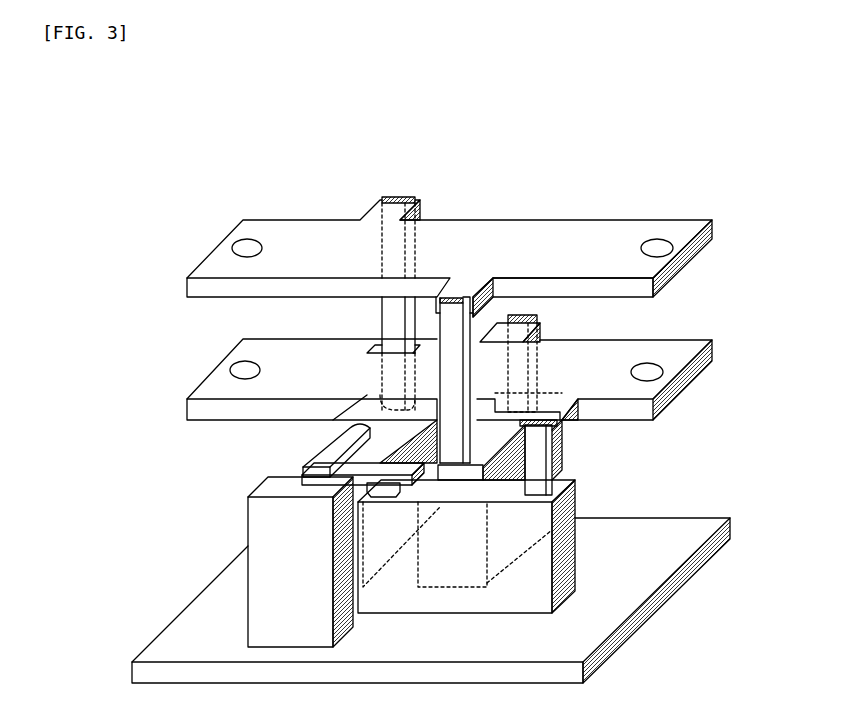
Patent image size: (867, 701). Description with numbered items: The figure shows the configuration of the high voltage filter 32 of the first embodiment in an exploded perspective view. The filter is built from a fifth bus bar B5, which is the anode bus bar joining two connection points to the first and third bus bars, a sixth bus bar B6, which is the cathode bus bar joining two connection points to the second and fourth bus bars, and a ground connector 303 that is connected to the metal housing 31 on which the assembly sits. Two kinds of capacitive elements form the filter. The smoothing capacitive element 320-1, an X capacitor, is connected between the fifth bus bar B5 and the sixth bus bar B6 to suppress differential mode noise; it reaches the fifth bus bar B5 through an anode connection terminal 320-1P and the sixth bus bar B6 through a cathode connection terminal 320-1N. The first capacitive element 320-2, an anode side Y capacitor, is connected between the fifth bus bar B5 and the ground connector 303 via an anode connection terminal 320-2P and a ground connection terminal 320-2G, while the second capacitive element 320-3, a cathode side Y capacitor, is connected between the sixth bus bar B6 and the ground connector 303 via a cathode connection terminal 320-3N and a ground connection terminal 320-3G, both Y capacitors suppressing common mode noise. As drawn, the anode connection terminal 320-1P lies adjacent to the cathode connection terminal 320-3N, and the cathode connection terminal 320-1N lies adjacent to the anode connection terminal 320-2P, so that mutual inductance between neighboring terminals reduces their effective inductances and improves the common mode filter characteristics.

The metal housing 31 is at (665, 607).
The high voltage filter 32 is at (598, 129).
The ground connector 303 is at (263, 530).
The smoothing capacitive element 320-1 is at (521, 339).
The cathode connection terminal 320-1N is at (459, 296).
The anode connection terminal 320-1P is at (521, 316).
The first capacitive element 320-2 is at (577, 565).
The ground connection terminal 320-2G is at (381, 493).
The anode connection terminal 320-2P is at (541, 458).
The second capacitive element 320-3 is at (314, 315).
The ground connection terminal 320-3G is at (345, 447).
The cathode connection terminal 320-3N is at (402, 196).
The fifth bus bar B5 is at (680, 342).
The sixth bus bar B6 is at (668, 218).